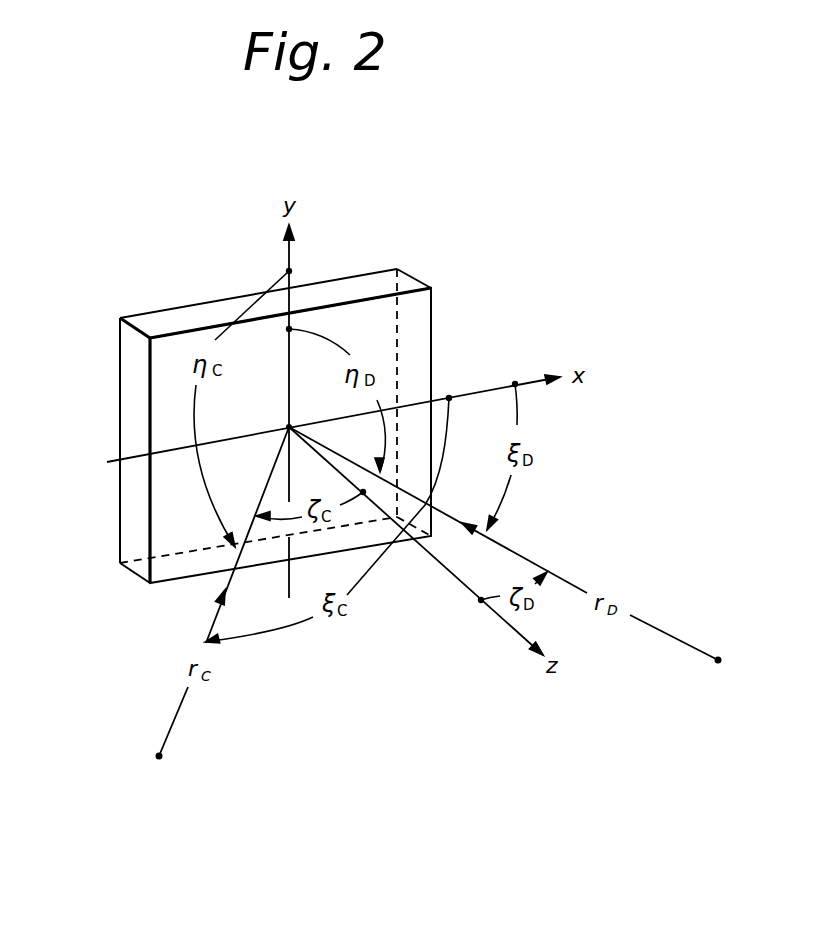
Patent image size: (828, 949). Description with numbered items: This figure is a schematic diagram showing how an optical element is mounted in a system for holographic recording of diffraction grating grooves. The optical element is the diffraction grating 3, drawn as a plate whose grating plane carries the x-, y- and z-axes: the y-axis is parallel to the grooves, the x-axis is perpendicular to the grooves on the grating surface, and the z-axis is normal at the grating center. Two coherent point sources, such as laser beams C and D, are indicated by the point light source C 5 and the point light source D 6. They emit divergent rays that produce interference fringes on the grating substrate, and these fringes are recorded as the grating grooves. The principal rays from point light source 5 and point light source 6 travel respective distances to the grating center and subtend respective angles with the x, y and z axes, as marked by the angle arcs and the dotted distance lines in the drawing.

The diffraction grating 3 is at (120, 345).
The point light source C 5 is at (141, 777).
The point light source D 6 is at (725, 660).